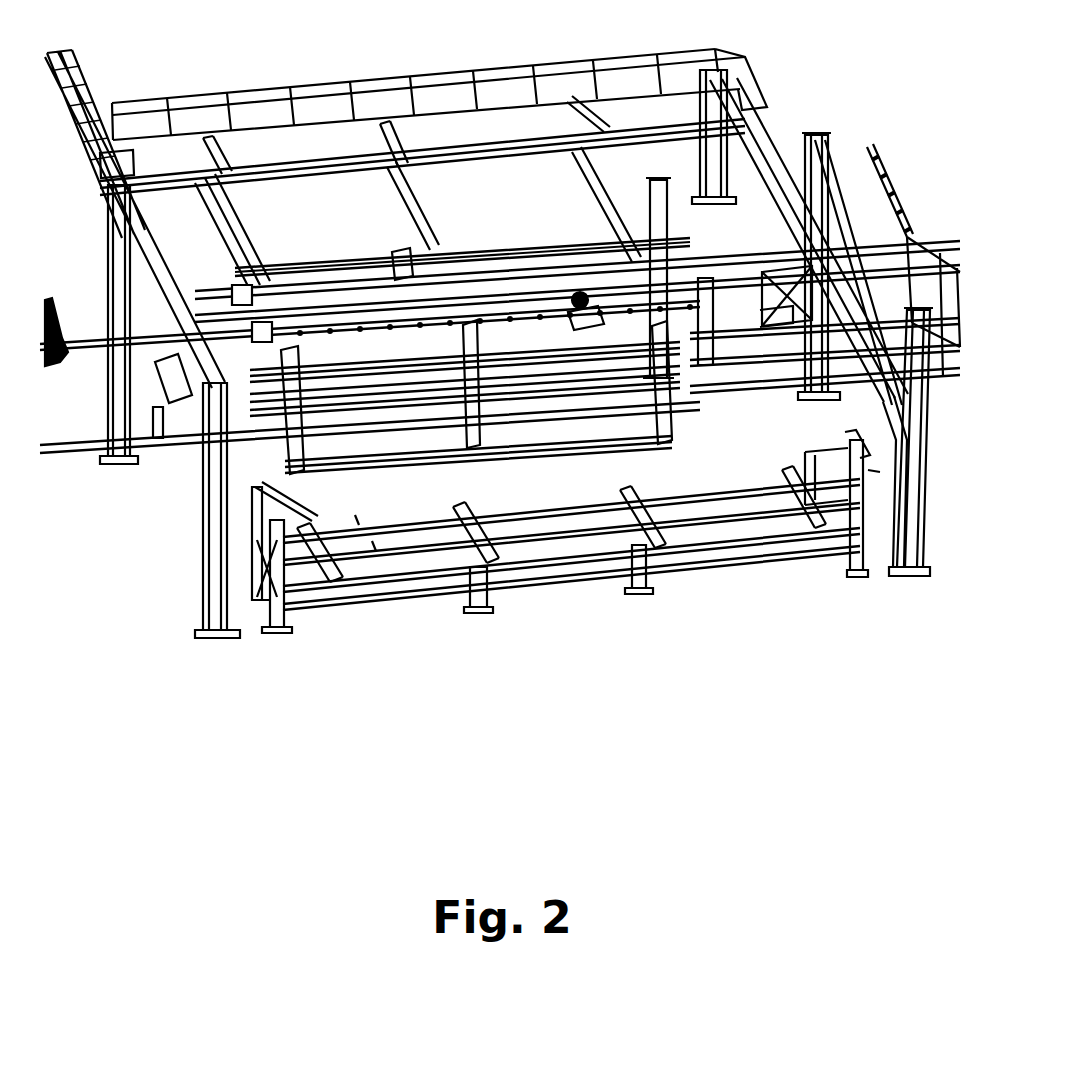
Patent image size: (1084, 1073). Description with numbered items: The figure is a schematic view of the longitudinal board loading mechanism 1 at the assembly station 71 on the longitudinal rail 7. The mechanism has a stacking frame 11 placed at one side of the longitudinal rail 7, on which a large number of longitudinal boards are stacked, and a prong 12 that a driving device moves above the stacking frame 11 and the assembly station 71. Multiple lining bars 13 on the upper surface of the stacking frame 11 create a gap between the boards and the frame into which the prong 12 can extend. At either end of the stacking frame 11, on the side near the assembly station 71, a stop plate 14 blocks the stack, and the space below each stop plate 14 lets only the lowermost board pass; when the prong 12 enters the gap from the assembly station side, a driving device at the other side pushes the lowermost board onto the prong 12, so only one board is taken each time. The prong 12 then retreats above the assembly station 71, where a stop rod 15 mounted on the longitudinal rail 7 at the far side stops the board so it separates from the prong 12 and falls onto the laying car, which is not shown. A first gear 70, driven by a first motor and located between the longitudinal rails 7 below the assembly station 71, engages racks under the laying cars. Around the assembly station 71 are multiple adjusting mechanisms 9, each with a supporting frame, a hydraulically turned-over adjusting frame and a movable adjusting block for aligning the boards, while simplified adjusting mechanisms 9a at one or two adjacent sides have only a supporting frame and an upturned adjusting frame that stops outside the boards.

The longitudinal board loading mechanism 1 is at (398, 613).
The longitudinal rail 7 is at (513, 350).
The first gear 70 is at (582, 296).
The assembly station 71 is at (462, 257).
The adjusting mechanism 9 is at (178, 418).
The adjusting mechanism 9a is at (397, 253).
The stacking frame 11 is at (533, 585).
The prong 12 is at (438, 333).
The lining bar 13 is at (657, 547).
The stop plate 14 is at (838, 550).
The stop rod 15 is at (302, 270).